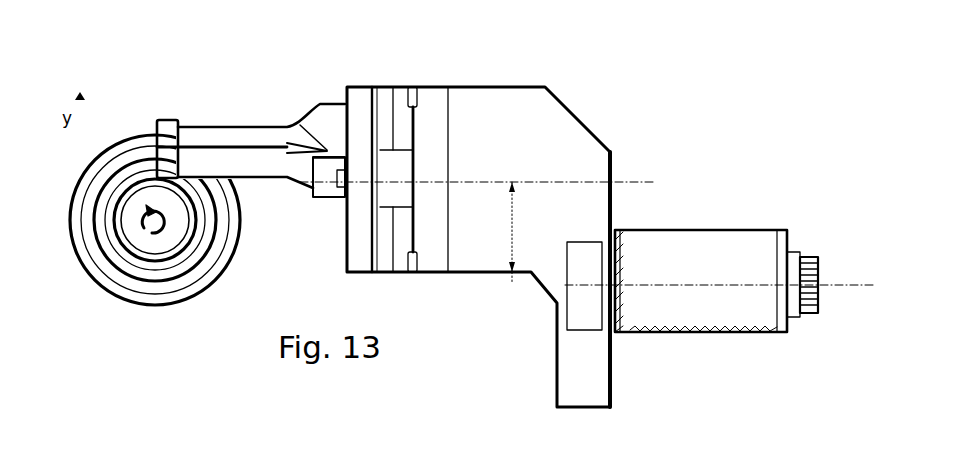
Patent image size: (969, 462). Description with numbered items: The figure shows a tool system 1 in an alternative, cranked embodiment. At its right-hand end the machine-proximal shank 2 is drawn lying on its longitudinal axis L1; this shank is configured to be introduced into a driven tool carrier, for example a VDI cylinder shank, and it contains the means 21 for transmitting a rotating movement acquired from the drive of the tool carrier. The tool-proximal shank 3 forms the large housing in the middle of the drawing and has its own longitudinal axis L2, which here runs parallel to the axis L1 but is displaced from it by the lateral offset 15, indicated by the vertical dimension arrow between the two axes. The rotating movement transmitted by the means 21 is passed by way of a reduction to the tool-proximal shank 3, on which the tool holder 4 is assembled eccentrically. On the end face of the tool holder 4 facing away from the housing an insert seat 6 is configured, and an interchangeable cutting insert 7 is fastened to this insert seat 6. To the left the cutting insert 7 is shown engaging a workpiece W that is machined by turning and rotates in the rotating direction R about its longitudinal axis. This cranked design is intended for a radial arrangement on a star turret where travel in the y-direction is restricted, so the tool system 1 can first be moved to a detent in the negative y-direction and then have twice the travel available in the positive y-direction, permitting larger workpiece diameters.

The tool system 1 is at (735, 152).
The machine-proximal shank 2 is at (707, 281).
The tool-proximal shank 3 is at (346, 87).
The tool holder 4 is at (232, 140).
The insert seat 6 is at (182, 127).
The cutting insert 7 is at (170, 120).
The lateral offset 15 is at (498, 232).
The means for transmitting a rotating movement 21 is at (816, 257).
The workpiece W is at (170, 300).
The rotating direction R is at (153, 219).
The longitudinal axis of the machine-proximal shank L1 is at (720, 273).
The longitudinal axis of the tool-proximal shank L2 is at (476, 170).